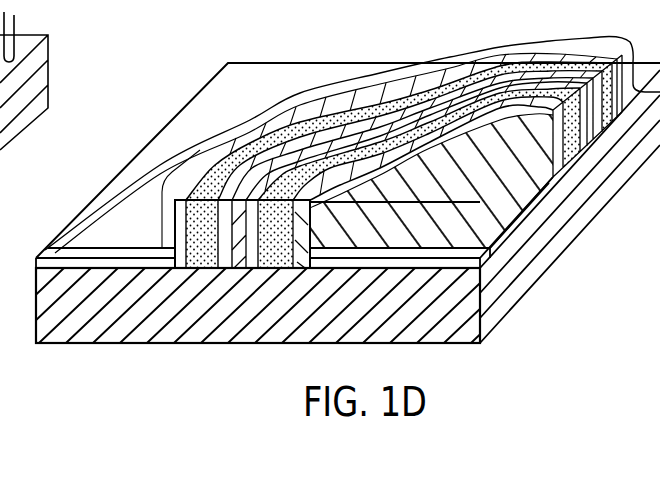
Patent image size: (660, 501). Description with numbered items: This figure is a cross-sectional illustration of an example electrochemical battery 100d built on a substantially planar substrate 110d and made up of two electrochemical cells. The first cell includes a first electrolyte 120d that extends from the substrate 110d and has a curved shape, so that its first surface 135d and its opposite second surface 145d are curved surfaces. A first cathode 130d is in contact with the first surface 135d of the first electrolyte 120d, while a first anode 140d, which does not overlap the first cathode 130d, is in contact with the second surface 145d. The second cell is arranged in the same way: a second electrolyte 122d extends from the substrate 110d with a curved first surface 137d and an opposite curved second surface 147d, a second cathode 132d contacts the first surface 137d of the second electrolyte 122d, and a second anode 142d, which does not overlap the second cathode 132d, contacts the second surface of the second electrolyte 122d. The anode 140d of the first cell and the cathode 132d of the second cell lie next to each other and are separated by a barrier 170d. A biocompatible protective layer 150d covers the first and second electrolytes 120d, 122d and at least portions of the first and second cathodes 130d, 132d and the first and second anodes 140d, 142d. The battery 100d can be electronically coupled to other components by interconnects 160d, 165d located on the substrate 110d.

The electrochemical battery 100d is at (386, 54).
The substrate 110d is at (234, 343).
The first electrolyte 120d is at (198, 256).
The second electrolyte 122d is at (282, 256).
The first cathode 130d is at (176, 196).
The second cathode 132d is at (250, 256).
The first surface of the first electrolyte 135d is at (185, 232).
The first surface of the second electrolyte 137d is at (302, 222).
The first anode 140d is at (228, 258).
The second anode 142d is at (296, 258).
The second surface of the first electrolyte 145d is at (217, 250).
The second surface of the second electrolyte 147d is at (264, 212).
The biocompatible protective layer 150d is at (161, 184).
The interconnect 160d is at (100, 258).
The interconnect 165d is at (417, 250).
The barrier 170d is at (298, 153).